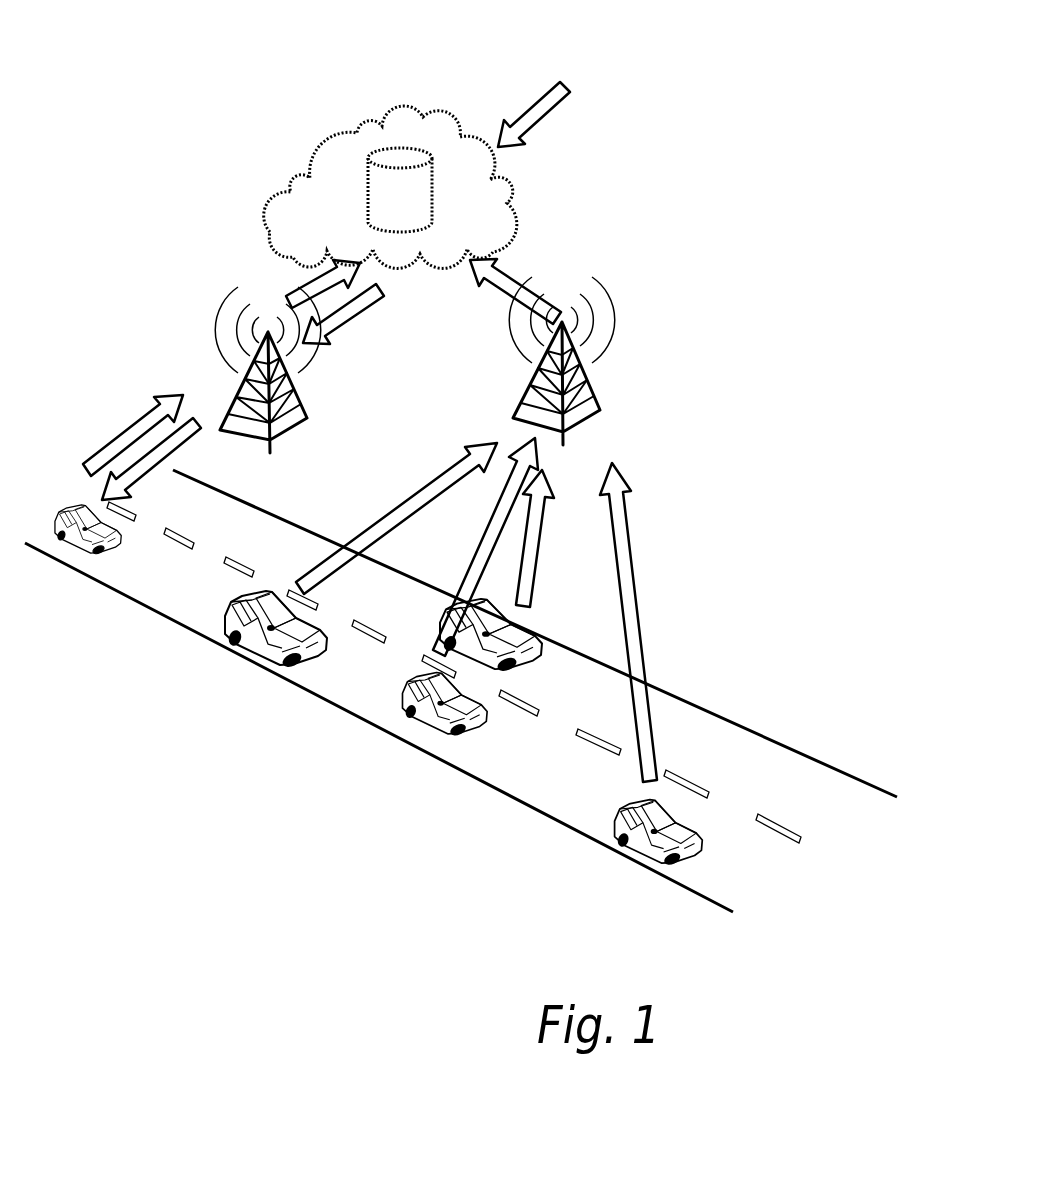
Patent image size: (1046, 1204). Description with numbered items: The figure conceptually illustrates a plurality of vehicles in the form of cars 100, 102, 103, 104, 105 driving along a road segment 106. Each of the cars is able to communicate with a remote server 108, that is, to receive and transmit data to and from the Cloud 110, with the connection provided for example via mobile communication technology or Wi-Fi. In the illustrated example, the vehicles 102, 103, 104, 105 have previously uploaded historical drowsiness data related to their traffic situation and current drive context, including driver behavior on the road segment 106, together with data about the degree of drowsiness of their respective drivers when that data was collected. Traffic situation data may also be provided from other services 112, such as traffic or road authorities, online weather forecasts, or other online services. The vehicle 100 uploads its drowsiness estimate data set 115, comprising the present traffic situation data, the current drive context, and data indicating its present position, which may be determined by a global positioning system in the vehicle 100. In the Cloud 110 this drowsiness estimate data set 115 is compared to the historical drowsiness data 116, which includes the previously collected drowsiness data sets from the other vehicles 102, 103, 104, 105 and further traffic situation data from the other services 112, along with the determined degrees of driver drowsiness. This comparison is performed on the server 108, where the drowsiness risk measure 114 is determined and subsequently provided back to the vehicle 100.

The vehicle 100 is at (107, 536).
The vehicle 102 is at (430, 713).
The vehicle 103 is at (255, 645).
The vehicle 104 is at (527, 637).
The vehicle 105 is at (638, 842).
The road segment 106 is at (328, 700).
The remote server 108 is at (404, 223).
The Cloud 110 is at (503, 199).
The other services 112 is at (750, 60).
The drowsiness risk measure 114 is at (178, 442).
The drowsiness estimate data set 115 is at (130, 430).
The historical drowsiness data 116 is at (390, 523).